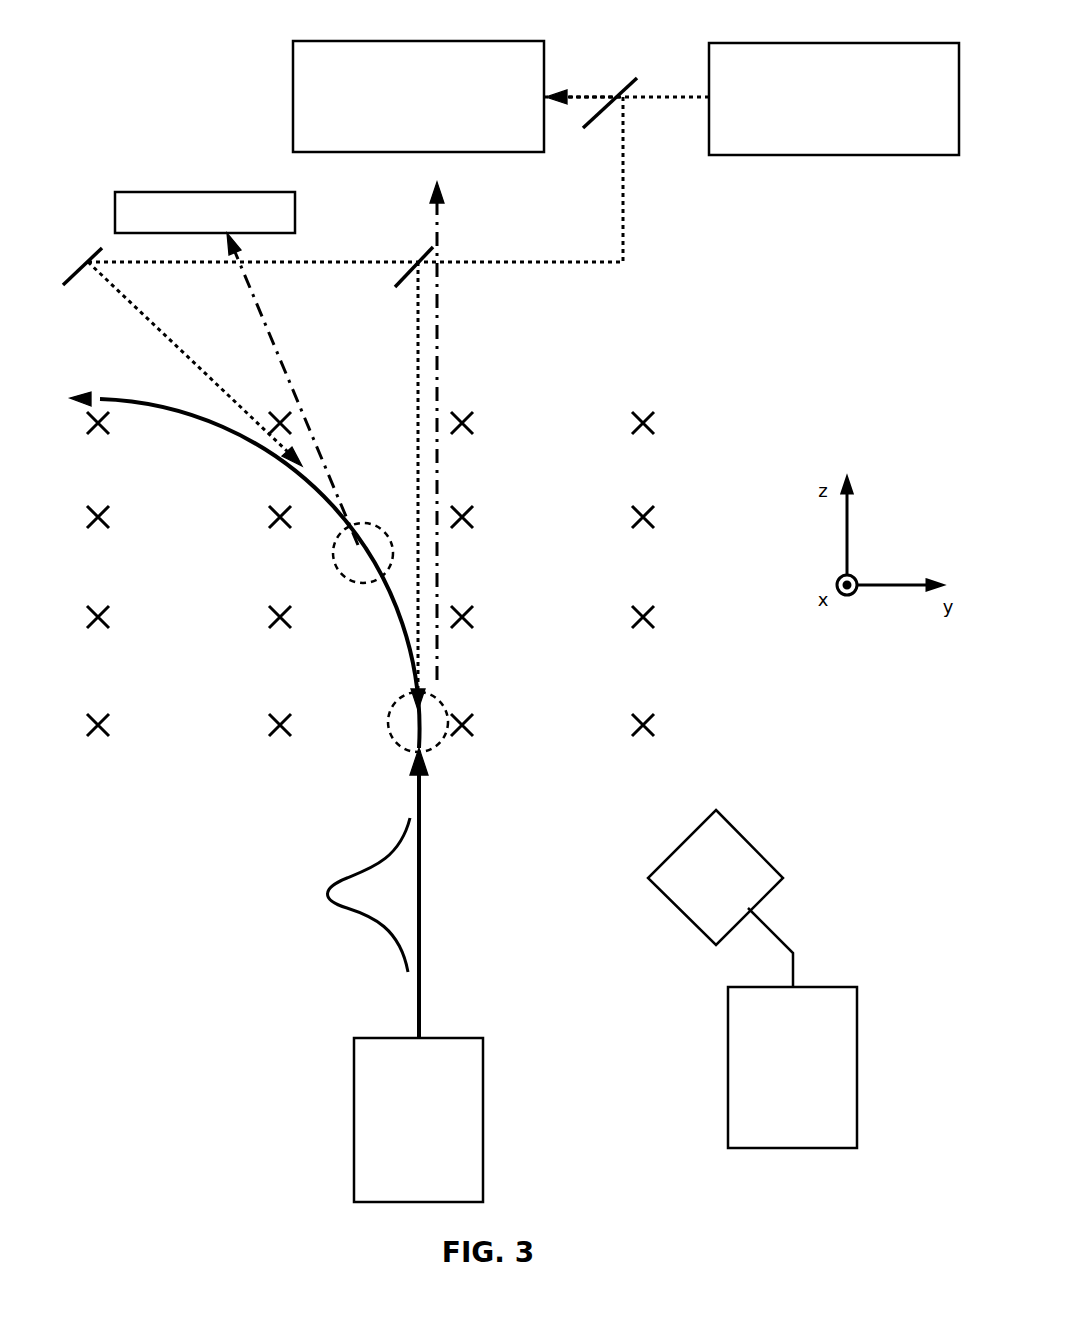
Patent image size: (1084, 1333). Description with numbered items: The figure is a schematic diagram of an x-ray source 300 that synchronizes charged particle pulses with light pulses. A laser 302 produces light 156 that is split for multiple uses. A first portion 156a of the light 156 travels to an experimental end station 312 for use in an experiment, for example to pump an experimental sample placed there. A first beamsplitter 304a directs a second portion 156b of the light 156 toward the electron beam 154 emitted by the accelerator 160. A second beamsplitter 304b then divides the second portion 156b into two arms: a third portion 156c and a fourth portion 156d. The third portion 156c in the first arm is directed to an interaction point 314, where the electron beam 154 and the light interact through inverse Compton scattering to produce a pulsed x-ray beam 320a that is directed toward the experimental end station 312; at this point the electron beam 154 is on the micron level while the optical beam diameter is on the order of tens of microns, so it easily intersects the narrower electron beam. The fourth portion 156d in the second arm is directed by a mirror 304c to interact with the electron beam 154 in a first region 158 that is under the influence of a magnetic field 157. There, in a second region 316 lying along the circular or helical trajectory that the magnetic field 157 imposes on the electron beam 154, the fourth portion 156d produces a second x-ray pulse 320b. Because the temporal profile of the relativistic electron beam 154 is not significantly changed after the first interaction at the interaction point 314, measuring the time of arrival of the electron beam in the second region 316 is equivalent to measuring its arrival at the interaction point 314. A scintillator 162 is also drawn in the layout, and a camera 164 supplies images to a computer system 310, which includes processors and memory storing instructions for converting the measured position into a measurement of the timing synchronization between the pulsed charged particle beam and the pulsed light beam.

The x-ray source 300 is at (187, 118).
The experimental end station 312 is at (418, 96).
The laser 302 is at (834, 99).
The scintillator 162 is at (205, 212).
The accelerator 160 is at (418, 1120).
The computer system 310 is at (792, 1028).
The camera 164 is at (715, 877).
The light 156 is at (680, 80).
The first portion of the light 156a is at (573, 60).
The second portion of the light 156b is at (628, 212).
The third portion of the light 156c is at (413, 404).
The fourth portion of the light 156d is at (160, 330).
The first beamsplitter 304a is at (586, 132).
The second beamsplitter 304b is at (393, 286).
The mirror 304c is at (62, 270).
The pulsed x-ray beam 320a is at (445, 327).
The second x-ray pulse 320b is at (262, 327).
The electron beam 154 is at (350, 850).
The interaction point 314 is at (438, 752).
The second region 316 is at (366, 598).
The magnetic field 157 is at (645, 627).
The first region 158 is at (543, 718).